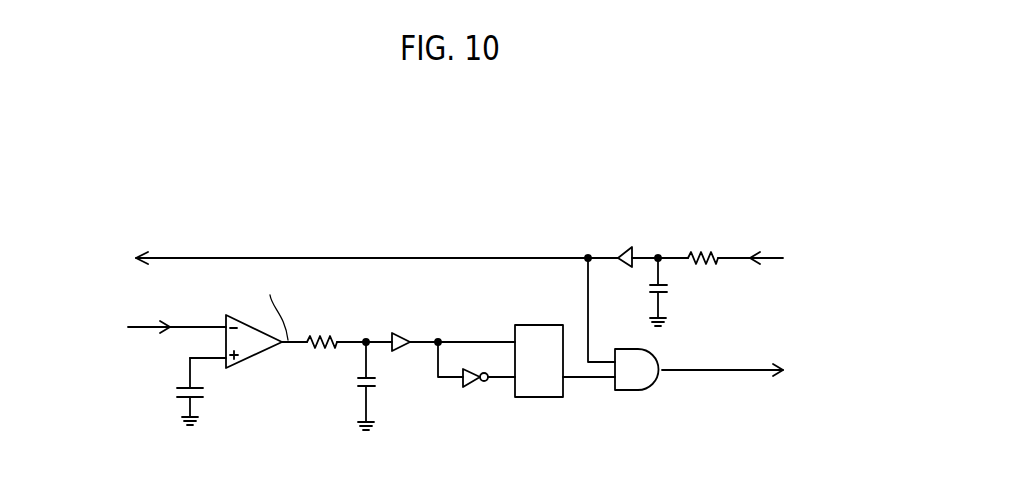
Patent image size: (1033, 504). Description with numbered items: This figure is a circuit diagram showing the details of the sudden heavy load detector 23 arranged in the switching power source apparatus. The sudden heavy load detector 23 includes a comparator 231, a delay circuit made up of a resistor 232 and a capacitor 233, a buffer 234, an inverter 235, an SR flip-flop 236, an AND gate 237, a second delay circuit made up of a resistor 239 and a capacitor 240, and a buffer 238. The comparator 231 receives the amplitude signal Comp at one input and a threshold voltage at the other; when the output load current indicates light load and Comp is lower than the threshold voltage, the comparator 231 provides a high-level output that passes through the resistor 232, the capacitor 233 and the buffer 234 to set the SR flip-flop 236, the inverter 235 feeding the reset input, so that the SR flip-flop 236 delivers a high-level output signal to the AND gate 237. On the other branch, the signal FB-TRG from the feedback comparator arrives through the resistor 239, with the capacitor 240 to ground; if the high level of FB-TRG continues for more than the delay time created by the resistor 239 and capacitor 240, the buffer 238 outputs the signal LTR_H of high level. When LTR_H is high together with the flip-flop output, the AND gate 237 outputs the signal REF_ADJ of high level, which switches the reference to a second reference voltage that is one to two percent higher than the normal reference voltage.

The sudden heavy load detector 23 is at (368, 225).
The comparator 231 is at (243, 372).
The resistor 232 is at (325, 335).
The capacitor 233 is at (356, 386).
The buffer 234 is at (402, 331).
The inverter 235 is at (470, 390).
The SR flip-flop 236 is at (540, 325).
The AND gate 237 is at (632, 392).
The buffer 238 is at (625, 247).
The resistor 239 is at (705, 250).
The capacitor 240 is at (672, 290).